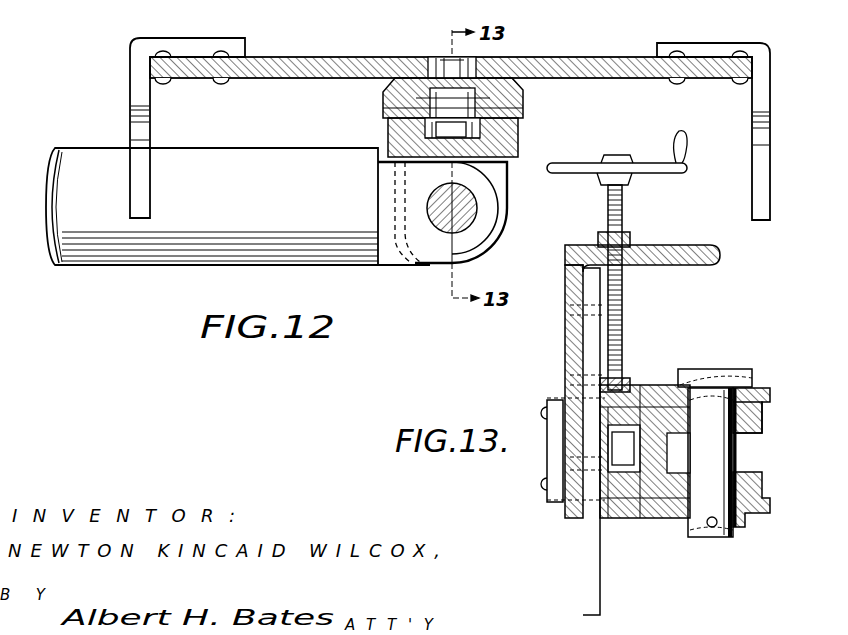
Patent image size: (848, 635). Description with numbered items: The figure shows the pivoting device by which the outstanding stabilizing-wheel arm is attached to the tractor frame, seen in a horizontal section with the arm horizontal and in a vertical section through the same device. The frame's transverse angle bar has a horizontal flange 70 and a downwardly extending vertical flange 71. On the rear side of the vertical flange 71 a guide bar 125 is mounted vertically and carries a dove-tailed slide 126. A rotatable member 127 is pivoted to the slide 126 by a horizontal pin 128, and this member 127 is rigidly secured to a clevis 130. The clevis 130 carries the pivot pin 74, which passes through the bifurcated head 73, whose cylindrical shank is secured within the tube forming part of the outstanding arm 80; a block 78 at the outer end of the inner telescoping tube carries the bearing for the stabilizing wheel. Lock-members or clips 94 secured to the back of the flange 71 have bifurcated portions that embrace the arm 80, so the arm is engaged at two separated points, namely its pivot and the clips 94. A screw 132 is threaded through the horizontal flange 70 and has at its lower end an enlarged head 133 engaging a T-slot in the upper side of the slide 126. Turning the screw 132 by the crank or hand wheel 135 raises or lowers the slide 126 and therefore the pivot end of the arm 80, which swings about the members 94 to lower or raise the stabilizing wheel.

In FIG. 13, the horizontal flange 70 is at (700, 266).
In FIG. 12, the vertical flange 71 is at (590, 68).
In FIG. 13, the vertical flange 71 is at (567, 279).
In FIG. 13, the bifurcated head 73 is at (748, 434).
In FIG. 12, the pivot pin 74 is at (470, 220).
In FIG. 13, the pivot pin 74 is at (710, 462).
In FIG. 12, the block 78 is at (421, 263).
In FIG. 12, the outstanding arm 80 is at (212, 206).
In FIG. 12, the lock-members or clips 94 is at (136, 93).
In FIG. 13, the lock-members or clips 94 is at (547, 401).
In FIG. 12, the guide bar 125 is at (402, 77).
In FIG. 13, the guide bar 125 is at (598, 576).
In FIG. 12, the dove-tailed slide 126 is at (524, 110).
In FIG. 13, the dove-tailed slide 126 is at (612, 520).
In FIG. 12, the rotatable member 127 is at (519, 137).
In FIG. 12, the horizontal pin 128 is at (385, 111).
In FIG. 12, the clevis 130 is at (503, 183).
In FIG. 13, the clevis 130 is at (746, 514).
In FIG. 13, the screw 132 is at (623, 307).
In FIG. 13, the enlarged head 133 is at (621, 380).
In FIG. 12, the crank or hand wheel 135 is at (663, 174).